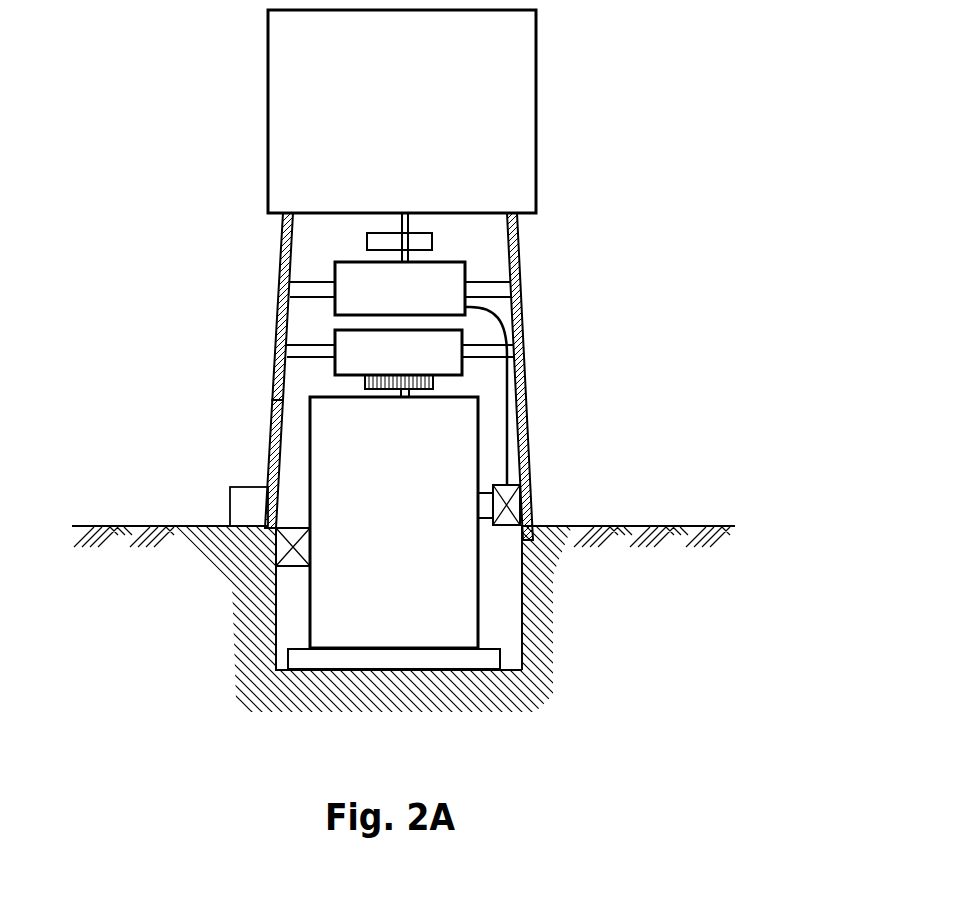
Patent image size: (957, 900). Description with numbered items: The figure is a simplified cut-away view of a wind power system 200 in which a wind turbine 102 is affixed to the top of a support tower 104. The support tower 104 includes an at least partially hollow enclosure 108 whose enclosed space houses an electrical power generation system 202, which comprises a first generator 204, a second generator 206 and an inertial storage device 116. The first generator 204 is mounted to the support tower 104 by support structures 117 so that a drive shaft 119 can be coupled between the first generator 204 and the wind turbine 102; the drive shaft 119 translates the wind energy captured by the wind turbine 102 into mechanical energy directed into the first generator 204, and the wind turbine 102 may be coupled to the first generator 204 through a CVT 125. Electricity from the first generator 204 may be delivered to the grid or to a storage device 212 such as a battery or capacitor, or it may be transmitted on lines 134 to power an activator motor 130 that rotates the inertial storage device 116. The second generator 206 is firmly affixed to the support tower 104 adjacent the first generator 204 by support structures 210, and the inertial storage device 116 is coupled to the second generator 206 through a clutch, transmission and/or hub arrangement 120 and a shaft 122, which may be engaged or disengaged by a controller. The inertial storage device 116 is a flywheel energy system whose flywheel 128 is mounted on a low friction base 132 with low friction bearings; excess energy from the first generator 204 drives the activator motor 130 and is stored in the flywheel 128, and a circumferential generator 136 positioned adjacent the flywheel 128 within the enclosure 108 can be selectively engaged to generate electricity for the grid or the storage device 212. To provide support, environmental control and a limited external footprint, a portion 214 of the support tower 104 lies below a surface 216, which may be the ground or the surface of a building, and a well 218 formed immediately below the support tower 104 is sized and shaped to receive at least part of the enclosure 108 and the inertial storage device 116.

The wind turbine 102 is at (268, 63).
The support tower 104 is at (275, 243).
The at least partially hollow enclosure 108 is at (532, 423).
The inertial storage device 116 is at (463, 572).
The support structures 117 is at (482, 280).
The drive shaft 119 is at (395, 223).
The clutch, transmission and/or hub arrangement 120 is at (363, 383).
The shaft or axle 122 is at (410, 392).
The CVT 125 is at (370, 252).
The flywheel 128 is at (408, 606).
The activator motor 130 is at (517, 502).
The low friction base 132 is at (463, 663).
The lines 134 is at (508, 327).
The circumferential generator 136 is at (302, 547).
The wind power system 200 is at (640, 371).
The electrical power generation system 202 is at (270, 401).
The first generator 204 is at (455, 272).
The second generator 206 is at (357, 353).
The support structures 210 is at (300, 342).
The storage device 212 is at (240, 503).
The portion of the support tower 214 is at (533, 540).
The surface 216 is at (150, 579).
The well 218 is at (256, 604).